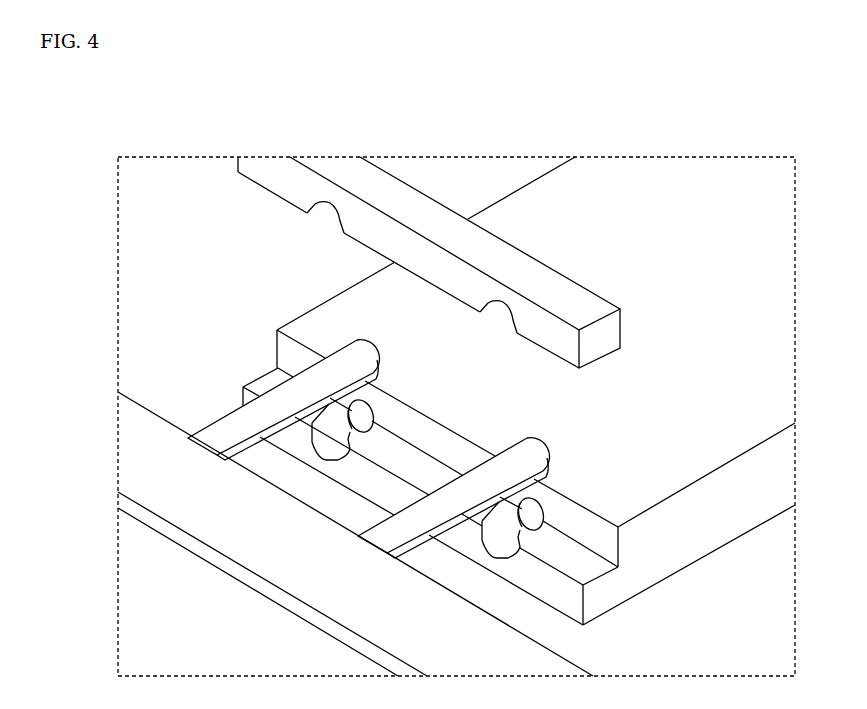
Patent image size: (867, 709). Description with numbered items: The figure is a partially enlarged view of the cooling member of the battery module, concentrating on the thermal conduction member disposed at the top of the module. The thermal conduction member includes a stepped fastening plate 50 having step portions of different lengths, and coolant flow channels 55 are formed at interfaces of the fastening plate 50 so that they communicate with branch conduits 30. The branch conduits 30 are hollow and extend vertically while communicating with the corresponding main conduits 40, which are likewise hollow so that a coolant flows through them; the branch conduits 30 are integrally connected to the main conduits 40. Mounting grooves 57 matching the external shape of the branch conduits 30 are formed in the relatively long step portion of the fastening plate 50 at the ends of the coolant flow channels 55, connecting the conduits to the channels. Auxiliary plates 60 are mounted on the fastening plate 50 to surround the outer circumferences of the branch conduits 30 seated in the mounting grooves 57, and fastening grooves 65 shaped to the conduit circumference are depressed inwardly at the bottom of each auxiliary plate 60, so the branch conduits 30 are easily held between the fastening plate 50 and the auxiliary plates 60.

The branch conduit 30 is at (446, 513).
The main conduit 40 is at (133, 466).
The fastening plate 50 is at (733, 497).
The coolant flow channel 55 is at (350, 400).
The mounting groove 57 is at (290, 418).
The auxiliary plate 60 is at (382, 174).
The fastening groove 65 is at (327, 204).